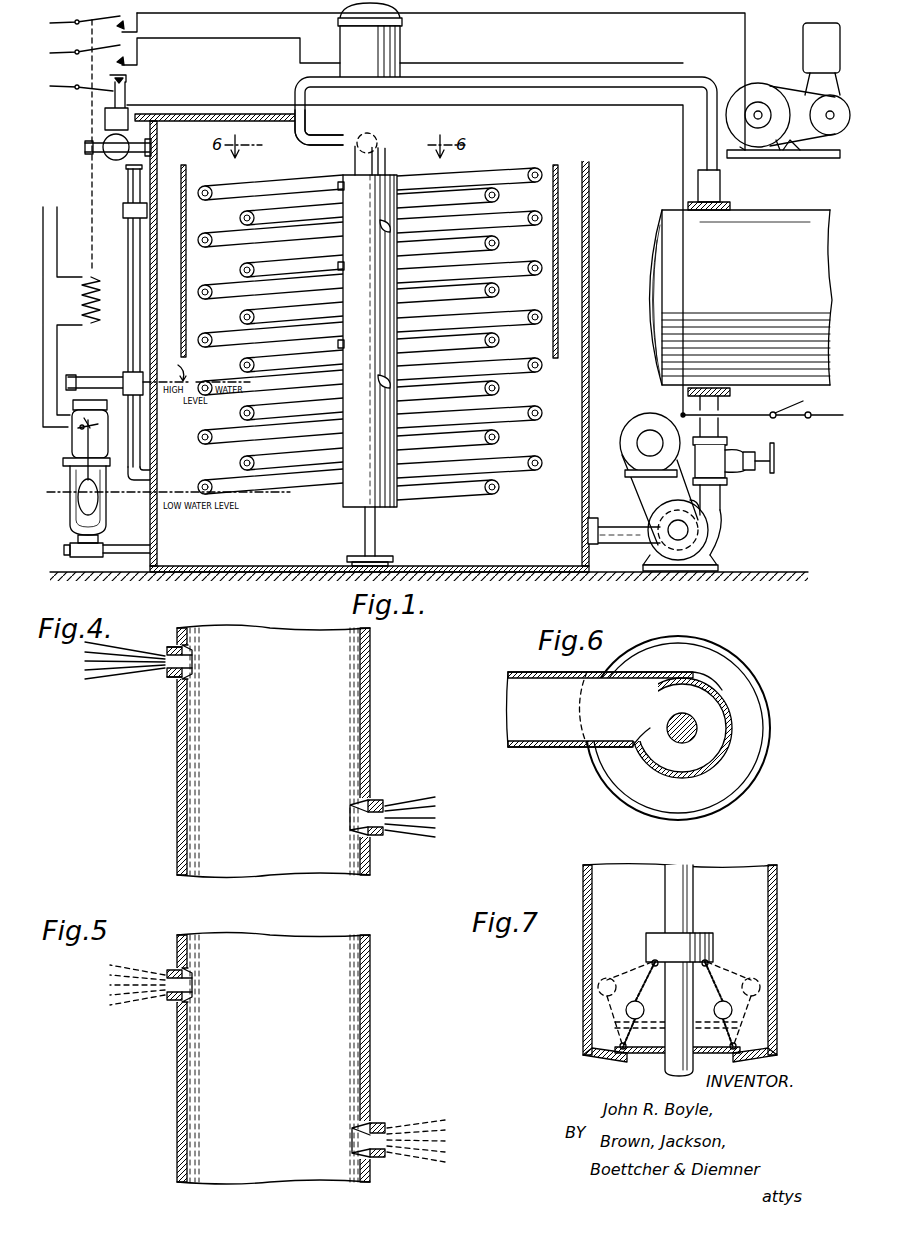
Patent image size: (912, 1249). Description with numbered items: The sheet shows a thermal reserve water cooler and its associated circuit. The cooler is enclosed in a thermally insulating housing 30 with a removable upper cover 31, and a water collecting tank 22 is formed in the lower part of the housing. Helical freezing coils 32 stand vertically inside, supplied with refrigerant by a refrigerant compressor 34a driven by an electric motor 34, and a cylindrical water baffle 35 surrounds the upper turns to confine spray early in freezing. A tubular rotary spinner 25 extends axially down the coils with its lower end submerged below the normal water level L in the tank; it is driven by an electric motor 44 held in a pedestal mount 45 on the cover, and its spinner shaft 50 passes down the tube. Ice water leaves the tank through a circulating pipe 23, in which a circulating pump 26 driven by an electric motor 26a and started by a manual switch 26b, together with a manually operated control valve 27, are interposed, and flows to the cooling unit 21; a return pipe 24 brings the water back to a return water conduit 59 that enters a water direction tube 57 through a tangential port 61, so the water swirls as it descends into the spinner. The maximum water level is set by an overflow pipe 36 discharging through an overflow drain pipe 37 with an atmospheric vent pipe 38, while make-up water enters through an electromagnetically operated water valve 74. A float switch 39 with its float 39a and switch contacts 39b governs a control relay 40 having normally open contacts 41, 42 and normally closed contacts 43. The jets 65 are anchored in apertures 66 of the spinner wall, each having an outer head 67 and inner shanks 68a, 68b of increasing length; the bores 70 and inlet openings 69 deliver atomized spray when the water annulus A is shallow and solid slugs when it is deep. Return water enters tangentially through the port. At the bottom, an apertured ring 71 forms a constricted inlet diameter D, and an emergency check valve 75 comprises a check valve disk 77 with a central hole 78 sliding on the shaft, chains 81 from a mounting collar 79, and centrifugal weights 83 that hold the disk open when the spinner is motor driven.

In FIG. 1, the cooling unit 21 is at (765, 218).
In FIG. 1, the water collecting tank 22 is at (463, 557).
In FIG. 1, the circulating pipe 23 is at (615, 528).
In FIG. 1, the return pipe 24 is at (575, 73).
In FIG. 1, the rotary spinner 25 is at (380, 286).
In FIG. 4, the rotary spinner 25 is at (178, 757).
In FIG. 5, the rotary spinner 25 is at (178, 1077).
In FIG. 6, the rotary spinner 25 is at (762, 672).
In FIG. 7, the rotary spinner 25 is at (583, 985).
In FIG. 1, the circulating pump 26 is at (708, 533).
In FIG. 1, the electric motor 26a is at (648, 420).
In FIG. 1, the manual switch 26b is at (795, 418).
In FIG. 1, the control valve 27 is at (725, 477).
In FIG. 1, the thermally insulating housing 30 is at (590, 150).
In FIG. 1, the upper cover 31 is at (256, 113).
In FIG. 1, the freezing coils 32 is at (205, 487).
In FIG. 1, the electric motor 34 is at (764, 85).
In FIG. 1, the refrigerant compressor 34a is at (805, 40).
In FIG. 1, the water baffle 35 is at (560, 222).
In FIG. 1, the overflow pipe 36 is at (141, 422).
In FIG. 1, the overflow drain pipe 37 is at (97, 385).
In FIG. 1, the atmospheric vent pipe 38 is at (126, 172).
In FIG. 1, the float switch 39 is at (93, 478).
In FIG. 1, the float 39a is at (95, 505).
In FIG. 1, the switch contacts 39b is at (80, 432).
In FIG. 1, the control relay 40 is at (68, 223).
In FIG. 1, the normally open contacts 41 is at (83, 62).
In FIG. 1, the normally open contacts 42 is at (86, 30).
In FIG. 1, the normally closed contacts 43 is at (81, 96).
In FIG. 1, the electric motor 44 is at (386, 42).
In FIG. 1, the pedestal mount 45 is at (398, 103).
In FIG. 6, the spinner shaft 50 is at (700, 729).
In FIG. 7, the spinner shaft 50 is at (686, 868).
In FIG. 1, the water direction tube 57 is at (380, 152).
In FIG. 6, the water direction tube 57 is at (722, 766).
In FIG. 1, the return water conduit 59 is at (320, 142).
In FIG. 6, the return water conduit 59 is at (552, 745).
In FIG. 6, the port 61 is at (690, 695).
In FIG. 1, the jets 65 is at (384, 222).
In FIG. 4, the jets 65 is at (168, 677).
In FIG. 5, the jets 65 is at (170, 1002).
In FIG. 4, the apertures 66 is at (176, 690).
In FIG. 5, the apertures 66 is at (372, 1160).
In FIG. 4, the outer heads 67 is at (170, 650).
In FIG. 4, the inner shank 68a is at (190, 648).
In FIG. 5, the inner shank 68a is at (192, 972).
In FIG. 4, the inner shank 68b is at (355, 802).
In FIG. 5, the inner shank 68b is at (355, 1125).
In FIG. 4, the inlet openings 69 is at (352, 820).
In FIG. 5, the inlet openings 69 is at (355, 1140).
In FIG. 4, the bores 70 is at (165, 657).
In FIG. 5, the bores 70 is at (165, 978).
In FIG. 7, the apertured disk or ring 71 is at (600, 1060).
In FIG. 1, the water valve 74 is at (104, 120).
In FIG. 7, the emergency check valve 75 is at (630, 937).
In FIG. 7, the check valve disk 77 is at (655, 1055).
In FIG. 7, the central hole 78 is at (700, 1052).
In FIG. 7, the mounting collar 79 is at (700, 934).
In FIG. 7, the chains 81 is at (648, 988).
In FIG. 7, the centrifugal weight 83 is at (733, 1010).
In FIG. 4, the water annulus A is at (356, 860).
In FIG. 5, the water annulus A is at (356, 1035).
In FIG. 1, the normal water level L is at (196, 366).
In FIG. 7, the inlet diameter D is at (630, 1063).